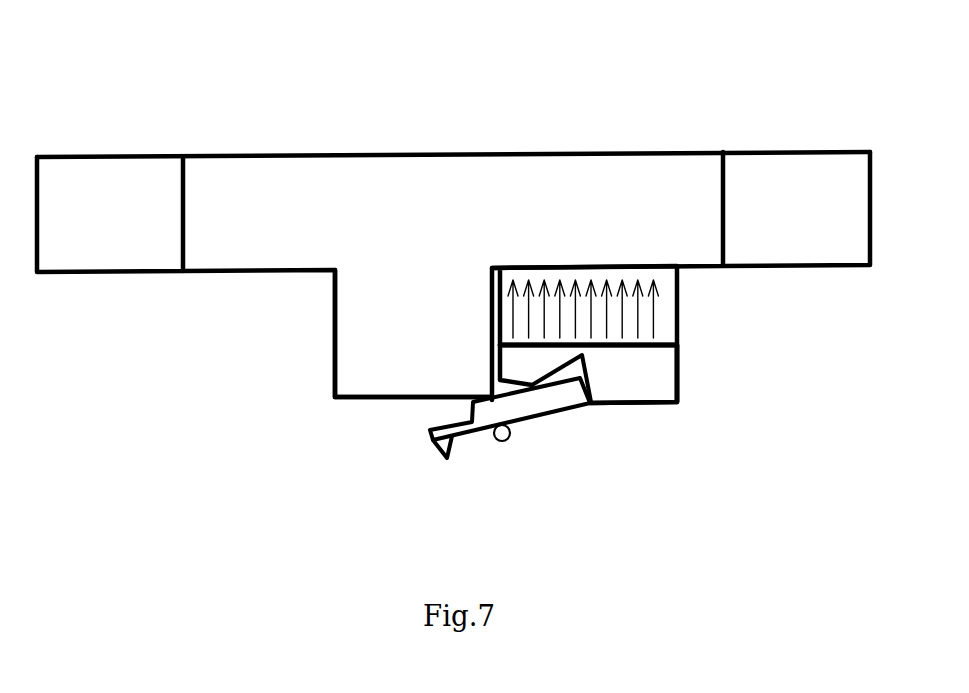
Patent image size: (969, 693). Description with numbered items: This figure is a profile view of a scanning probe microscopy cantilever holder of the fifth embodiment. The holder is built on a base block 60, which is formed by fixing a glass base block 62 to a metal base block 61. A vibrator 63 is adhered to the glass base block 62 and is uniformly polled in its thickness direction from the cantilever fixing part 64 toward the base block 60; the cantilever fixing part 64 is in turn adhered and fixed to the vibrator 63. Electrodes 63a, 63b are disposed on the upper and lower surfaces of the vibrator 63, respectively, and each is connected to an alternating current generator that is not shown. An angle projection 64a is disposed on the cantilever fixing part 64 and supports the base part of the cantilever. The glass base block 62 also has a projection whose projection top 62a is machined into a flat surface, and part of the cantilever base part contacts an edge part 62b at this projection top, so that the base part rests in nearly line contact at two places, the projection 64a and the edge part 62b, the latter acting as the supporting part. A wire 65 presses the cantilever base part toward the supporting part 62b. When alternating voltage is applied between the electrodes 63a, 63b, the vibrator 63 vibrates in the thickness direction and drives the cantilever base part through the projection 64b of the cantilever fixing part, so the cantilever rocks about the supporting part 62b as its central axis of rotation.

The base block 60 is at (255, 135).
The metal base block 61 is at (140, 200).
The glass base block 62 is at (387, 202).
The projection top 62a is at (358, 400).
The edge part 62b is at (487, 396).
The vibrator 63 is at (652, 298).
The electrode 63a is at (590, 267).
The electrode 63b is at (630, 345).
The cantilever fixing part 64 is at (642, 385).
The angle projection 64a is at (612, 350).
The projection of the cantilever fixing part 64b is at (558, 413).
The wire 65 is at (510, 435).